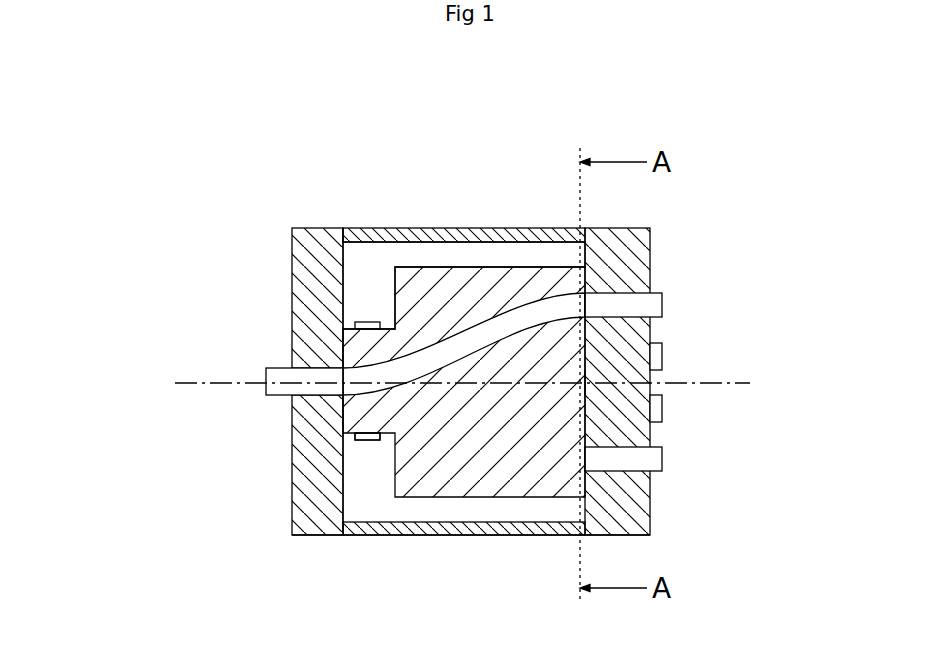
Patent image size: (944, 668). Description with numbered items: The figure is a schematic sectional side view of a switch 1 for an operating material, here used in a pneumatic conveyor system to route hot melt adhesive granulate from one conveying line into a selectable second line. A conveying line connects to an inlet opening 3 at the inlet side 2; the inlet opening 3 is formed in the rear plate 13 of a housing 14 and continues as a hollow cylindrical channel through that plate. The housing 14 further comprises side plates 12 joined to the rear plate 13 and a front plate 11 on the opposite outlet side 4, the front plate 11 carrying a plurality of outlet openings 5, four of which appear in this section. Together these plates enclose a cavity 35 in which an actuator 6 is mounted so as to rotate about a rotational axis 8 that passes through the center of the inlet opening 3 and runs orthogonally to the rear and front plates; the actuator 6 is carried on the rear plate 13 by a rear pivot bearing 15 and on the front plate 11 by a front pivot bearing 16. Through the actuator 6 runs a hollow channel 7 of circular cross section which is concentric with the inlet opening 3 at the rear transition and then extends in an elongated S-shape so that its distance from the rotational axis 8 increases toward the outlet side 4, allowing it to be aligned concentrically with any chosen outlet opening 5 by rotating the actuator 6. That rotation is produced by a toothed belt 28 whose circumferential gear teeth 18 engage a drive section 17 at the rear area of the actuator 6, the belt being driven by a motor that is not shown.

The switch 1 is at (143, 130).
The inlet side 2 is at (168, 342).
The inlet opening 3 is at (270, 385).
The outlet side 4 is at (828, 341).
The outlet openings 5 is at (658, 298).
The actuator 6 is at (438, 298).
The channel 7 is at (492, 338).
The rotational axis 8 is at (200, 383).
The front plate 11 is at (630, 248).
The side plates 12 is at (408, 228).
The rear plate 13 is at (313, 285).
The housing 14 is at (419, 540).
The rear pivot bearing 15 is at (336, 386).
The front pivot bearing 16 is at (595, 380).
The drive section 17 is at (367, 357).
The circumferential gear teeth 18 is at (362, 443).
The toothed belt 28 is at (368, 442).
The cavity 35 is at (365, 266).